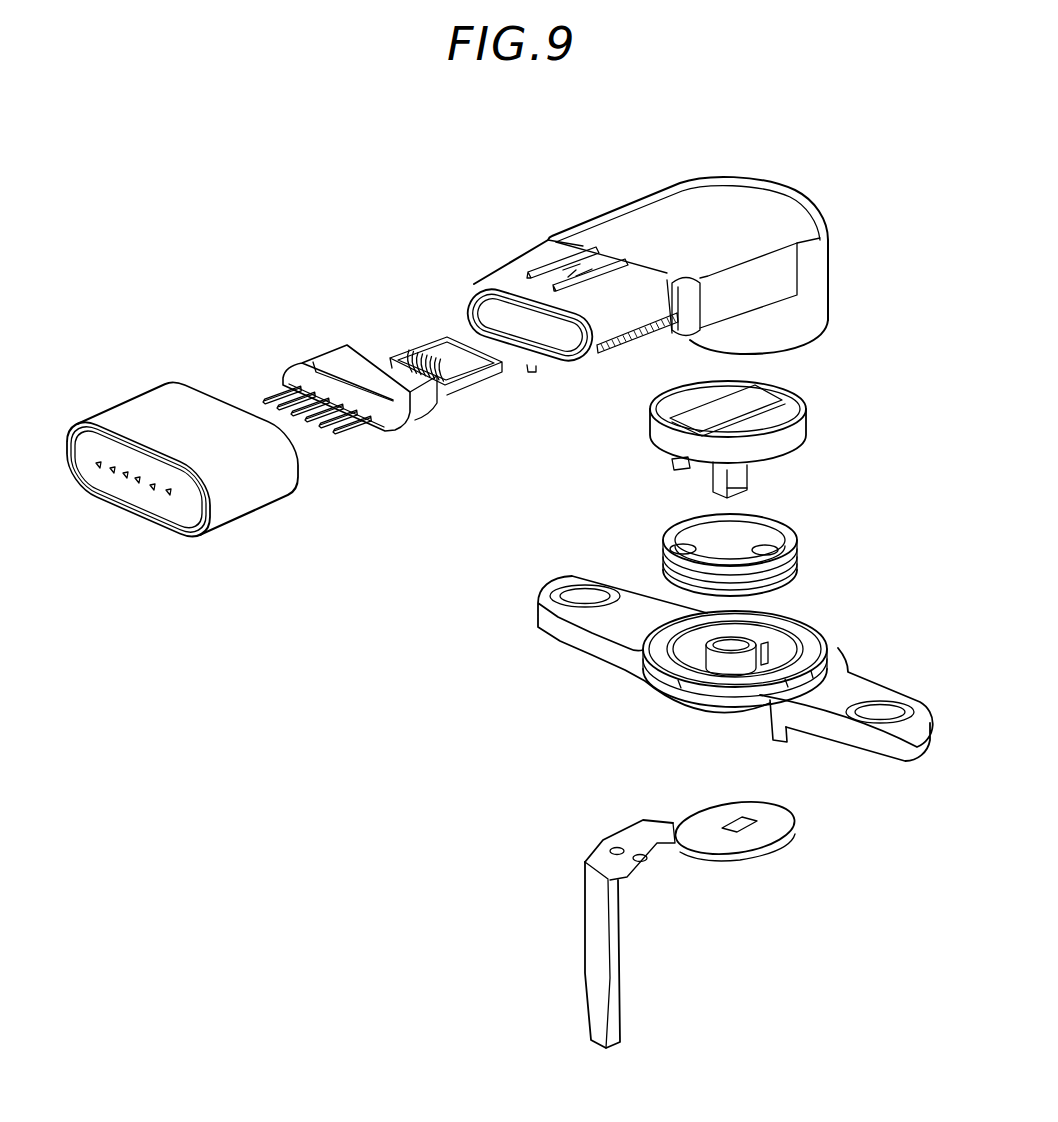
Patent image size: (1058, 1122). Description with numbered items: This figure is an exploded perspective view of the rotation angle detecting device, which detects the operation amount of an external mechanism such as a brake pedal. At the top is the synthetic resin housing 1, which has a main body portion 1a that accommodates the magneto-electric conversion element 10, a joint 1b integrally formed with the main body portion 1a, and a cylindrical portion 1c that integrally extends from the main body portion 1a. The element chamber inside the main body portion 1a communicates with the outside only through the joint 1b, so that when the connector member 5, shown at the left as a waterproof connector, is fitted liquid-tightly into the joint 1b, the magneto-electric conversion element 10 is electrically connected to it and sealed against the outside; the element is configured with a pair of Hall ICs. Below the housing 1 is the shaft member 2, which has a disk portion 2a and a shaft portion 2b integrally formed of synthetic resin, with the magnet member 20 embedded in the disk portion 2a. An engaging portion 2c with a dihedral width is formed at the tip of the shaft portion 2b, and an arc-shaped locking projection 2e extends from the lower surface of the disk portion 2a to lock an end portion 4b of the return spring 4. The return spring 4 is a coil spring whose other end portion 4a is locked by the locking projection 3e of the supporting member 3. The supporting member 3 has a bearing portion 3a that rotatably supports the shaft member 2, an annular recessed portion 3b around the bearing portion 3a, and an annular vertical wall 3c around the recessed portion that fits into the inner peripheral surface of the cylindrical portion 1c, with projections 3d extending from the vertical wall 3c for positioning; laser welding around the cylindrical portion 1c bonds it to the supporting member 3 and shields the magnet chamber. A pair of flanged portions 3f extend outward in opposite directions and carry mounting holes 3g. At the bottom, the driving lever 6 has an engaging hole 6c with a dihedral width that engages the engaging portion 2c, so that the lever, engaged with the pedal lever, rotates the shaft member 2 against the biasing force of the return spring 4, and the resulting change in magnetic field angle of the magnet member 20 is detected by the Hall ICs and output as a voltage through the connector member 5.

The housing 1 is at (683, 291).
The main body portion 1a is at (823, 268).
The joint 1b is at (554, 350).
The cylindrical portion 1c is at (823, 318).
The magnet member 20 is at (765, 401).
The shaft member 2 is at (767, 434).
The disk portion 2a is at (797, 440).
The shaft portion 2b is at (743, 470).
The engaging portion 2c is at (715, 488).
The locking projection 2e is at (680, 462).
The return spring 4 is at (734, 547).
The end portion 4a is at (782, 546).
The end portion 4b is at (673, 543).
The supporting member 3 is at (721, 654).
The bearing portion 3a is at (733, 667).
The annular recessed portion 3b is at (697, 657).
The vertical wall 3c is at (760, 678).
The projections 3d is at (817, 680).
The locking projection 3e is at (770, 645).
The flanged portions 3f is at (558, 634).
The mounting holes 3g is at (588, 597).
The connector member 5 is at (240, 508).
The magneto-electric conversion element 10 is at (470, 367).
The driving lever 6 is at (728, 921).
The engaging hole 6c is at (750, 820).